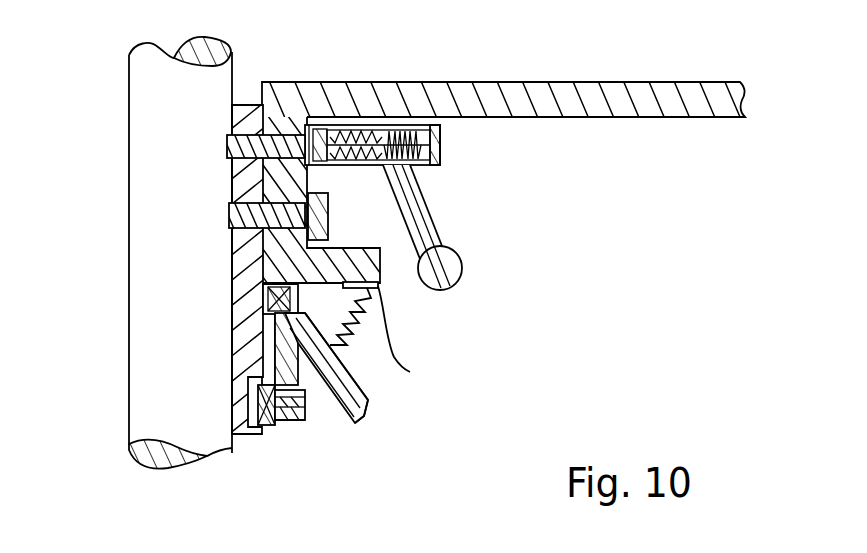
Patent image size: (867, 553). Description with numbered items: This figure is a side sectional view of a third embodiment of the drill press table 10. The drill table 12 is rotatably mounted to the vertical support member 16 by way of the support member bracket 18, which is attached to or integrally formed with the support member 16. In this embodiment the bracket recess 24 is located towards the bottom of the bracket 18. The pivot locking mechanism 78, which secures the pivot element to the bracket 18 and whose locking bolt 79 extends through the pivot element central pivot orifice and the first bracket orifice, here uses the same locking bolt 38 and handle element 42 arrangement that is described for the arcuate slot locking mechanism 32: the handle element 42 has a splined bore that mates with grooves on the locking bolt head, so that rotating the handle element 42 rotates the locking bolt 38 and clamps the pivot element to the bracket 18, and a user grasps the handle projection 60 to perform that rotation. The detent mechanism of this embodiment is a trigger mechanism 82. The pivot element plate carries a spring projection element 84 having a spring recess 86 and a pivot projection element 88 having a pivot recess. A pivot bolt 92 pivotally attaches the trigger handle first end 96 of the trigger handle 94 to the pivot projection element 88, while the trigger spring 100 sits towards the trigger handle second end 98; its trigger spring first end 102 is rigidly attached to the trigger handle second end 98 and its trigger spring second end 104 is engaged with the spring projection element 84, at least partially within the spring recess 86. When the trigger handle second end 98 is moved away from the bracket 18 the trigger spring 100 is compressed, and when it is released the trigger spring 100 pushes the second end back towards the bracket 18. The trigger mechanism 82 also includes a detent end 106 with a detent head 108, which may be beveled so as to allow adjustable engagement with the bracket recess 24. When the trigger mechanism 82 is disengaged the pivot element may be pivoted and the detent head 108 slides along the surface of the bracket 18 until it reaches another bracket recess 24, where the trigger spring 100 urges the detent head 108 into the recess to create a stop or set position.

The drill press table 10 is at (620, 230).
The drill table 12 is at (557, 80).
The support member 16 is at (129, 194).
The support member bracket 18 is at (237, 414).
The bracket recess 24 is at (253, 434).
The arcuate slot locking mechanism 32 is at (457, 140).
The locking bolt 38 is at (250, 125).
The handle element 42 is at (427, 223).
The handle projection 60 is at (443, 260).
The pivot locking mechanism 78 is at (337, 215).
The locking bolt 79 is at (232, 178).
The trigger mechanism 82 is at (500, 397).
The spring projection element 84 is at (363, 262).
The spring recess 86 is at (378, 280).
The pivot projection element 88 is at (263, 328).
The pivot bolt 92 is at (263, 308).
The trigger handle 94 is at (323, 415).
The trigger handle first end 96 is at (275, 340).
The trigger handle second end 98 is at (368, 405).
The trigger spring 100 is at (415, 338).
The trigger spring first end 102 is at (372, 378).
The trigger spring second end 104 is at (348, 357).
The detent end 106 is at (293, 430).
The detent head 108 is at (250, 382).